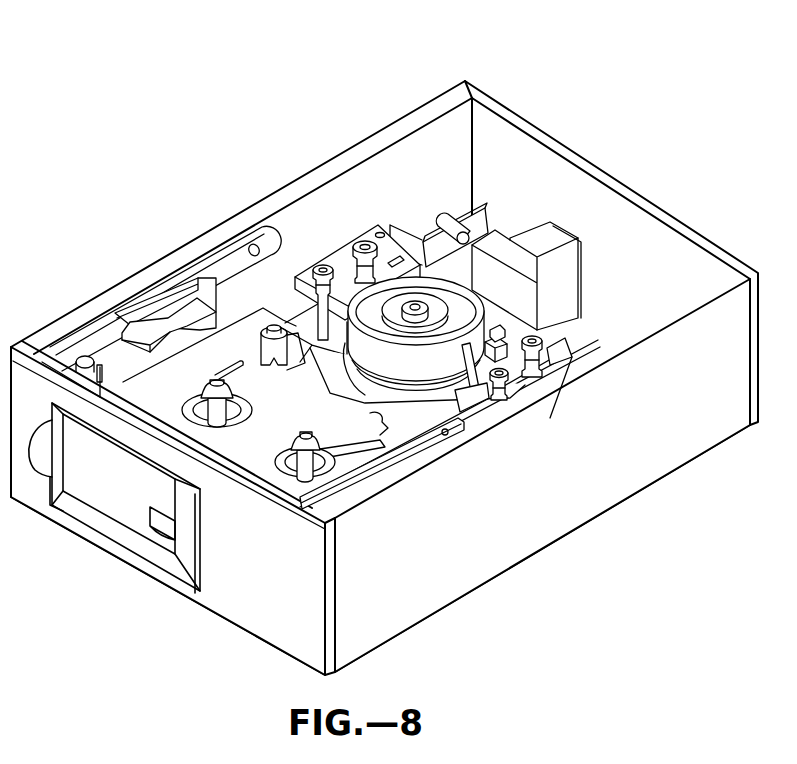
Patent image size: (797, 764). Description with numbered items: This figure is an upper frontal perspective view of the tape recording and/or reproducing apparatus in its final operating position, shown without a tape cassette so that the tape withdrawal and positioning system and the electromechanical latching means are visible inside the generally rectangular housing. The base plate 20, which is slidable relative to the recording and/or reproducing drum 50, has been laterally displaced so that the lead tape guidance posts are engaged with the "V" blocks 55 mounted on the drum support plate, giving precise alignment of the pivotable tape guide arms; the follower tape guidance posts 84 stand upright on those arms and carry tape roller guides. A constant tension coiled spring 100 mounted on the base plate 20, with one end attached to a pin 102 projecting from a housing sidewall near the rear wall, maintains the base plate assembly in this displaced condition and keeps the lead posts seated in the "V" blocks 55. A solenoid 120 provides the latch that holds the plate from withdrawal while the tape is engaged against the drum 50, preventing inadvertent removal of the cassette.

The base plate 20 is at (580, 340).
The tape recording and/or reproducing drum 50 is at (442, 283).
The "V" block 55 is at (356, 240).
The follower tape guidance post 84 is at (358, 245).
The constant tension coiled spring 100 is at (432, 237).
The pin 102 is at (472, 222).
The solenoid 120 is at (498, 240).